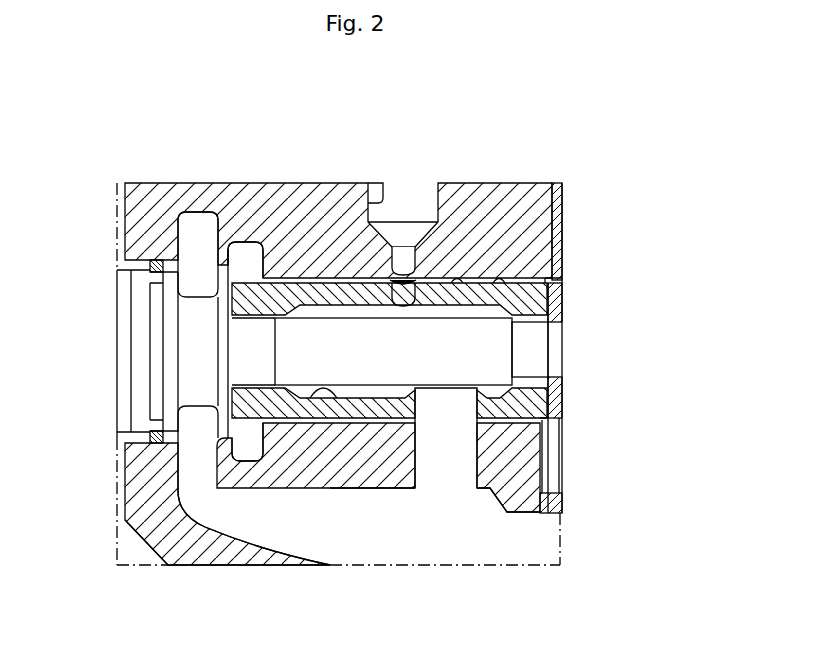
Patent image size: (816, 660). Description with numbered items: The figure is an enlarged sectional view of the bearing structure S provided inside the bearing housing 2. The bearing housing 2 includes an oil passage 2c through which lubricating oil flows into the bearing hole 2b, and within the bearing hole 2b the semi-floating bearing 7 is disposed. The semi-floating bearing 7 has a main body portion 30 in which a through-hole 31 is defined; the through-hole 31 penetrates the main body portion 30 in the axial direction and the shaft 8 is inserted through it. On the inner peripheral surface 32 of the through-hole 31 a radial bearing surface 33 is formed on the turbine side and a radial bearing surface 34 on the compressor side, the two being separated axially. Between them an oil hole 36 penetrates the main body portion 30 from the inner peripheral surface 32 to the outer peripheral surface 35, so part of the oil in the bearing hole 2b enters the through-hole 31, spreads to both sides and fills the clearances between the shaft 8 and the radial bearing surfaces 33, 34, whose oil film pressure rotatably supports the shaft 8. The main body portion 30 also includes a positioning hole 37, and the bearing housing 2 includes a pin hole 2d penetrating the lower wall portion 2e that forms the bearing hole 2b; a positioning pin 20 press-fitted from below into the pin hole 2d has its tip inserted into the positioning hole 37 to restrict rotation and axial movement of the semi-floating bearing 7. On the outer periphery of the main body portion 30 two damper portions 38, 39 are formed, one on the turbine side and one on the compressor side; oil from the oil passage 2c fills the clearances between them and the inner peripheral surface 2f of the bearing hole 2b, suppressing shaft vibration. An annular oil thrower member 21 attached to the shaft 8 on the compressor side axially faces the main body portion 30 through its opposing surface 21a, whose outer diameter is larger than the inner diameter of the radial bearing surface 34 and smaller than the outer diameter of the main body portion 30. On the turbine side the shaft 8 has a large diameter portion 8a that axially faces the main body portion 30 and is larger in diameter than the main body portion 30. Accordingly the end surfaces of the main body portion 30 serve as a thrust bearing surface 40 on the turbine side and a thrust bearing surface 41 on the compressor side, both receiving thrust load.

The bearing structure S is at (93, 141).
The bearing housing 2 is at (131, 183).
The bearing hole 2b is at (457, 282).
The oil passage 2c is at (379, 183).
The pin hole 2d is at (420, 468).
The wall portion 2e is at (381, 488).
The inner peripheral surface 2f is at (499, 282).
The semi-floating bearing 7 is at (262, 250).
The shaft 8 is at (202, 296).
The large diameter portion 8a is at (248, 262).
The positioning pin 20 is at (452, 458).
The oil thrower member 21 is at (562, 253).
The opposing surface 21a is at (551, 278).
The main body portion 30 is at (233, 418).
The through-hole 31 is at (318, 405).
The inner peripheral surface 32 is at (335, 390).
The radial bearing surface 33 is at (121, 566).
The radial bearing surface 34 is at (562, 380).
The outer peripheral surface 35 is at (240, 462).
The oil hole 36 is at (390, 280).
The positioning hole 37 is at (482, 488).
The damper portion 38 is at (285, 445).
The damper portion 39 is at (543, 512).
The thrust bearing surface 40 is at (183, 505).
The thrust bearing surface 41 is at (563, 402).